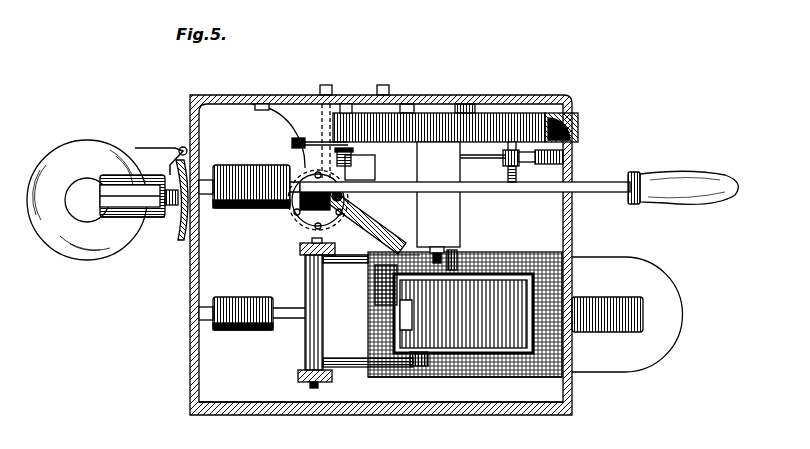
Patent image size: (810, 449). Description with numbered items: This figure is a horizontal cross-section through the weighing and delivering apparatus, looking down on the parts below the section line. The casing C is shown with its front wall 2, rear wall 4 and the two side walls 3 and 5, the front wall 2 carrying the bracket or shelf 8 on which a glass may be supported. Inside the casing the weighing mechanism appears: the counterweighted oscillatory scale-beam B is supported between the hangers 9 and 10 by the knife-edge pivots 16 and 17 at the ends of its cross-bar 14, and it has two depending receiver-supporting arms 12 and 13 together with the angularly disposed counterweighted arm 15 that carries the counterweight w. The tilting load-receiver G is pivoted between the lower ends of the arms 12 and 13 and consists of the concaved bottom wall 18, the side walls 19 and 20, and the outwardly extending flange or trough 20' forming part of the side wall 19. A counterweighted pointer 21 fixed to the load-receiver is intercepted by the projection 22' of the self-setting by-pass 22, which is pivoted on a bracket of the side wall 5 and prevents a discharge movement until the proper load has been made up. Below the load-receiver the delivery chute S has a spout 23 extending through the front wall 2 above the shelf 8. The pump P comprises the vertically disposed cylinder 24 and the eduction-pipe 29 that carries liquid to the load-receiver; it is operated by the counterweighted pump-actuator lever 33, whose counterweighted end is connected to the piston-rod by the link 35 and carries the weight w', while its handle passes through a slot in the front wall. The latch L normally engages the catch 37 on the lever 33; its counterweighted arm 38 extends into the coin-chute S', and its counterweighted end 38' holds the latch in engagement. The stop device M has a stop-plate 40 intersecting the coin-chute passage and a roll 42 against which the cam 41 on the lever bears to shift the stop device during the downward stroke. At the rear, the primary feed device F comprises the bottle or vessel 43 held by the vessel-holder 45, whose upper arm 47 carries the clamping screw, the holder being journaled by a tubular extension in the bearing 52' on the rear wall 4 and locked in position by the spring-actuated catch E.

The front wall 2 is at (572, 236).
The side wall 3 is at (264, 410).
The rear wall 4 is at (192, 352).
The side wall 5 is at (242, 95).
The bracket or shelf 8 is at (660, 282).
The hanger 9 is at (298, 376).
The hanger 10 is at (344, 262).
The receiver-supporting arm 12 is at (360, 367).
The receiver-supporting arm 13 is at (355, 263).
The cross-bar 14 is at (306, 342).
The counterweighted arm 15 is at (290, 318).
The knife-edge pivot 16 is at (314, 388).
The knife-edge pivot 17 is at (300, 249).
The concaved bottom wall 18 is at (440, 318).
The side wall 19 is at (490, 352).
The side wall 20 is at (465, 303).
The flange or trough 20' is at (367, 287).
The pointer 21 is at (480, 270).
The by-pass 22 is at (440, 236).
The projection 22' is at (469, 248).
The spout 23 is at (616, 287).
The cylinder 24 is at (340, 215).
The eduction-pipe 29 is at (390, 226).
The pump actuator or lever 33 is at (550, 192).
The link 35 is at (300, 205).
The catch 37 is at (511, 182).
The counterweighted arm 38 is at (489, 162).
The counterweighted end 38' is at (561, 152).
The stop-plate 40 is at (330, 118).
The cam 41 is at (365, 165).
The roll 42 is at (336, 158).
The vessel or primary feeder 43 is at (62, 226).
The vessel-holder 45 is at (139, 196).
The upper arm 47 is at (132, 222).
The bearing 52' is at (169, 220).
The scale-beam B is at (287, 294).
The casing C is at (168, 330).
The spring-actuated catch E is at (168, 148).
The primary feed device F is at (87, 191).
The load-receiver G is at (463, 314).
The latch L is at (527, 163).
The stop device M is at (296, 140).
The pump P is at (312, 208).
The delivery chute S is at (465, 389).
The coin-chute S' is at (455, 159).
The counterweight w is at (236, 303).
The weight w' is at (244, 175).